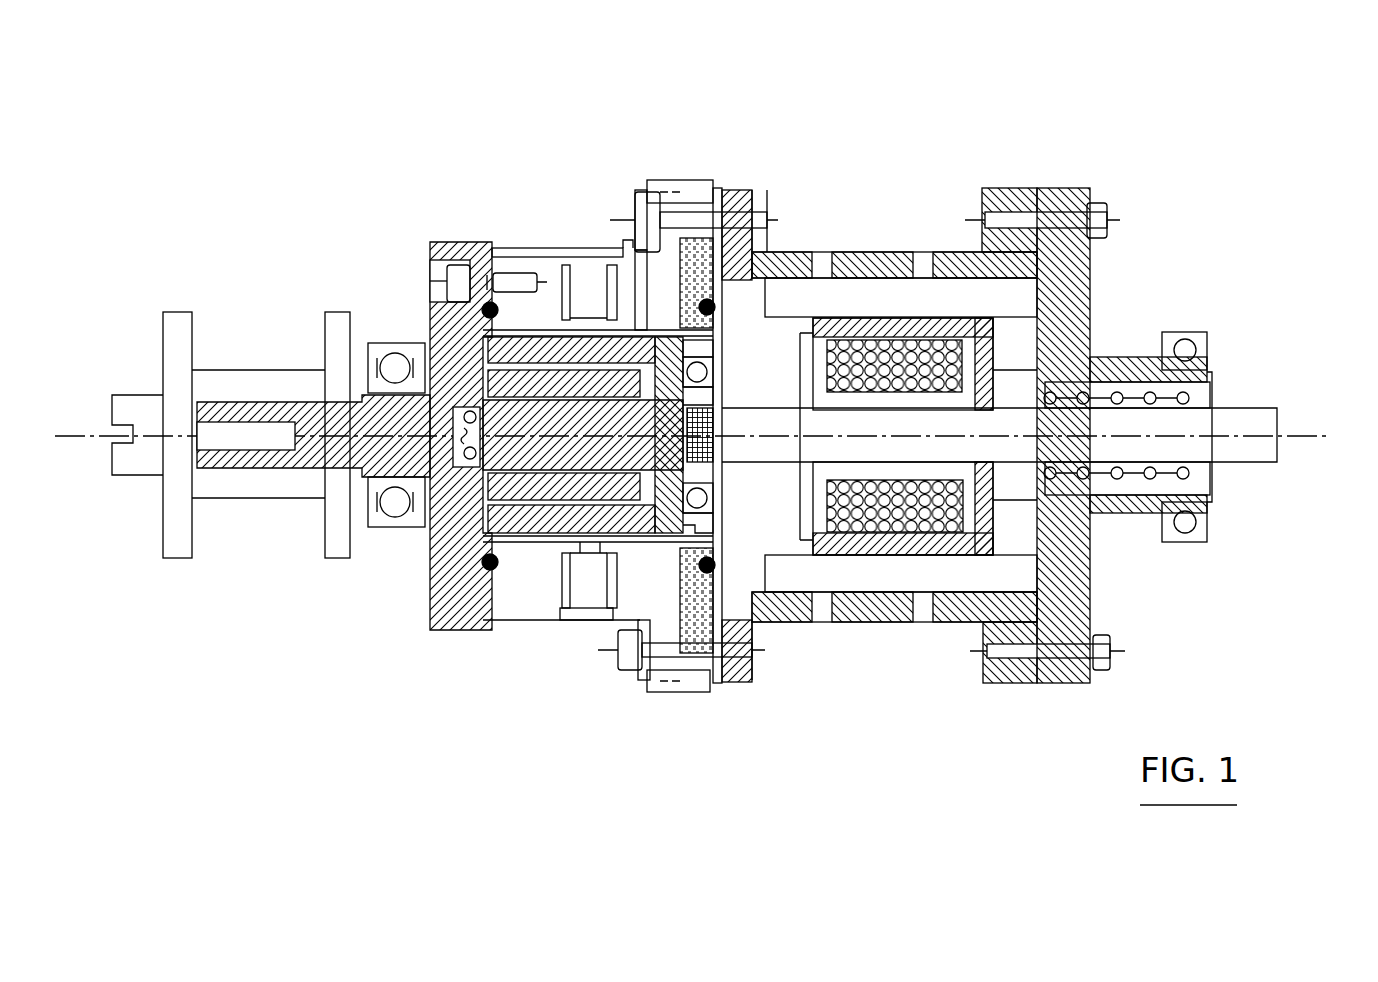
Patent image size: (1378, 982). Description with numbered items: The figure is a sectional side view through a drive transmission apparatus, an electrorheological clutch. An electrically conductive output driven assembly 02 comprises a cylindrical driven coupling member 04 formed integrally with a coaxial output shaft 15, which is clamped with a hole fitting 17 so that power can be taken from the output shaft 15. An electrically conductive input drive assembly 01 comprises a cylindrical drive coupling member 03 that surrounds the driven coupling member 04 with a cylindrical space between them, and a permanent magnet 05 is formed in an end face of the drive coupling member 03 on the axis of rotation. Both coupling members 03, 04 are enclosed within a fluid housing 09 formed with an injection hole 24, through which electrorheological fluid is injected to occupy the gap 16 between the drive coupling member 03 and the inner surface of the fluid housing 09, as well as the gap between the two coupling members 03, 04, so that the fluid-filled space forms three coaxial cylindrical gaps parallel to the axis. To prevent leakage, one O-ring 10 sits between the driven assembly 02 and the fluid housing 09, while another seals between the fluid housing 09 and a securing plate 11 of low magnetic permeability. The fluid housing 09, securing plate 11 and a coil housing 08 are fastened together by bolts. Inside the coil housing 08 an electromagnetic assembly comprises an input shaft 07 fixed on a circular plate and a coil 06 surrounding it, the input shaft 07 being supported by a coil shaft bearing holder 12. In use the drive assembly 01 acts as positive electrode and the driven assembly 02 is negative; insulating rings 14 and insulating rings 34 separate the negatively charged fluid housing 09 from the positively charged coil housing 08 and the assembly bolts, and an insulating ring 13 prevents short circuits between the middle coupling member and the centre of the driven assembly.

The input drive assembly 01 is at (655, 425).
The output driven assembly 02 is at (422, 327).
The drive coupling member 03 is at (583, 303).
The driven coupling member 04 is at (546, 488).
The permanent magnet 05 is at (720, 437).
The coil 06 is at (882, 345).
The input shaft 07 is at (1244, 402).
The coil housing 08 is at (790, 612).
The fluid housing 09 is at (531, 580).
The O-ring 10 is at (697, 573).
The securing plate 11 is at (713, 522).
The coil shaft bearing holder 12 is at (1058, 193).
The insulating ring 13 is at (452, 470).
The insulating rings 14 is at (694, 252).
The output shaft 15 is at (313, 437).
The gap 16 is at (538, 333).
The hole fitting 17 is at (270, 505).
The injection hole 24 is at (580, 340).
The insulating rings 34 is at (640, 683).